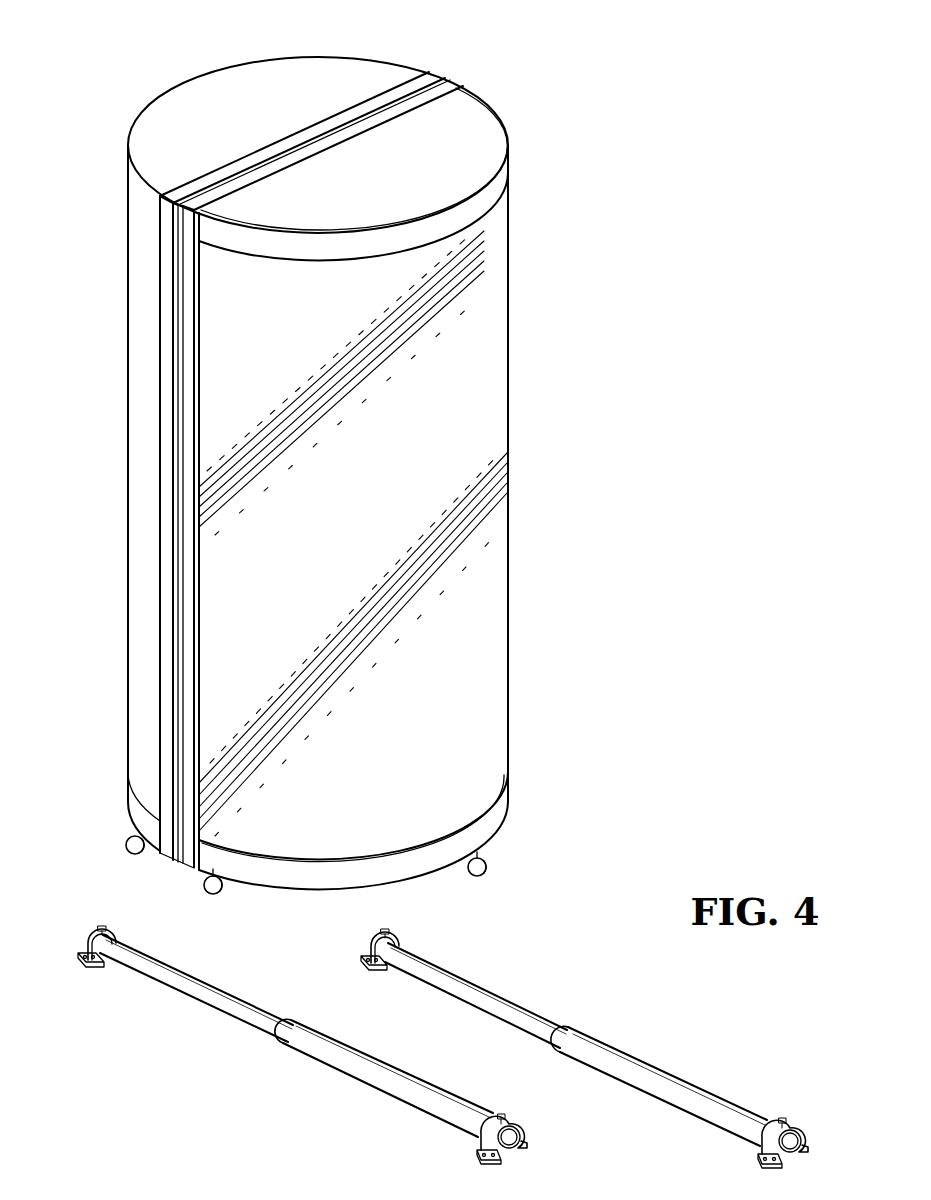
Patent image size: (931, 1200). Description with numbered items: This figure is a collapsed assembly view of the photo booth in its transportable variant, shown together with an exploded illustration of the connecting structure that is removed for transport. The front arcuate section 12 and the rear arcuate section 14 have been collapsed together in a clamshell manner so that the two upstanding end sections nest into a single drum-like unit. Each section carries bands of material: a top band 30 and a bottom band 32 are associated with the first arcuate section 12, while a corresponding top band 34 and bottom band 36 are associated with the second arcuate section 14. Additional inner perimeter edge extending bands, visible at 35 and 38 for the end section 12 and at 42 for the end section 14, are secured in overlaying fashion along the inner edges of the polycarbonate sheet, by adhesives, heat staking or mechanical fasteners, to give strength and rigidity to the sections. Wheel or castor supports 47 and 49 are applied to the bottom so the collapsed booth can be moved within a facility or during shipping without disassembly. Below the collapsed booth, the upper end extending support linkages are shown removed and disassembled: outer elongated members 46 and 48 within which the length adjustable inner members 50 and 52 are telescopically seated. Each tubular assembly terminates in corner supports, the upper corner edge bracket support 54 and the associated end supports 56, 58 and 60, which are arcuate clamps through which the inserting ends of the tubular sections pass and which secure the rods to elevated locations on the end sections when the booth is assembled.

The first arcuate section 12 is at (150, 515).
The second arcuate section 14 is at (353, 507).
The top band 30 is at (155, 203).
The bottom band 32 is at (132, 803).
The top band 34 is at (455, 230).
The inner perimeter edge extending band 35 is at (160, 355).
The bottom band 36 is at (283, 875).
The inner perimeter edge extending band 38 is at (305, 132).
The inner perimeter edge extending band 42 is at (375, 122).
The outer elongated member 46 is at (660, 1062).
The castor support 47 is at (210, 895).
The outer elongated member 48 is at (370, 1070).
The castor support 49 is at (488, 876).
The inner member 50 is at (512, 997).
The inner member 52 is at (215, 1000).
The upper corner edge bracket support 54 is at (386, 935).
The end support 56 is at (785, 1125).
The end support 58 is at (95, 937).
The end support 60 is at (490, 1125).